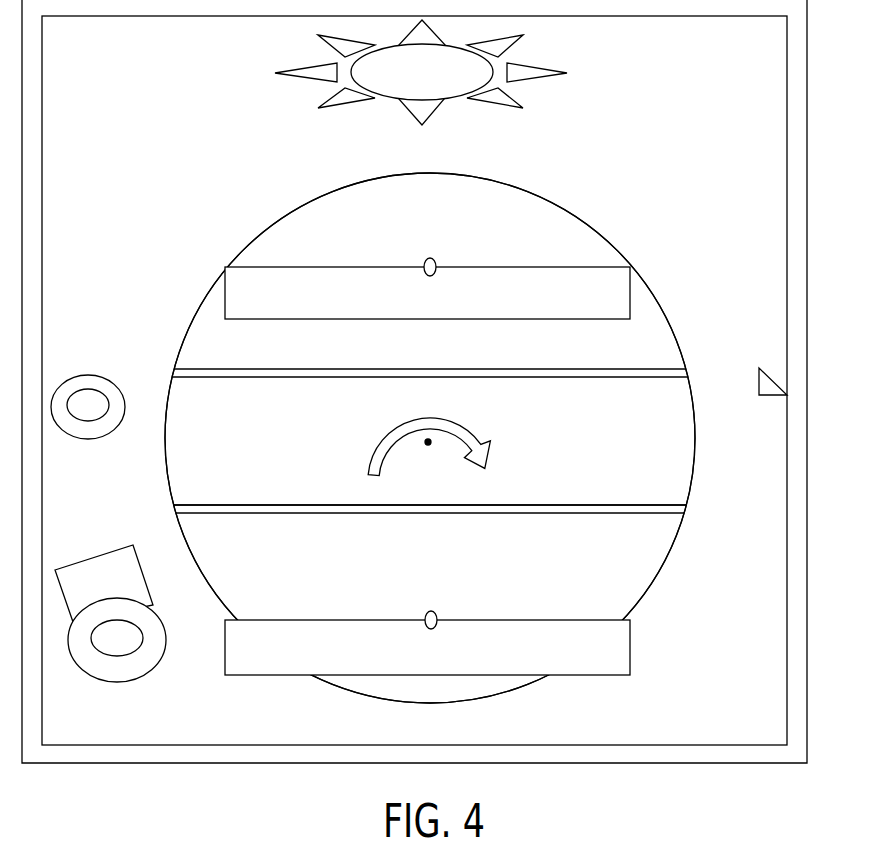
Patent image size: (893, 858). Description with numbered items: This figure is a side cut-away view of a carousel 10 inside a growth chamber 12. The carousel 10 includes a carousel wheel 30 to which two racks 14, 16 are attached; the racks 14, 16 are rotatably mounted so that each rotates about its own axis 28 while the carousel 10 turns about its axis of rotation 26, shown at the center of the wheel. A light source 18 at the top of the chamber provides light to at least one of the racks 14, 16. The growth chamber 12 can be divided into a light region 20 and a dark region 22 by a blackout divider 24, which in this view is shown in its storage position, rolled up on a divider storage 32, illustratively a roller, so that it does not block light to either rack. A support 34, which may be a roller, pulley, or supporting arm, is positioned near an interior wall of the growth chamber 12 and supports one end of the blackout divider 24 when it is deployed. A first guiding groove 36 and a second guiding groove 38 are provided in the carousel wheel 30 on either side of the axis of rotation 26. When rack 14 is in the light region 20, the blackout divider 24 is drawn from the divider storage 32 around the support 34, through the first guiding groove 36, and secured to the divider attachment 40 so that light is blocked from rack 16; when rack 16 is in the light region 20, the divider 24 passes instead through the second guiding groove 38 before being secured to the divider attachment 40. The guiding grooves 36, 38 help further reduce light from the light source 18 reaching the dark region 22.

The carousel 10 is at (170, 162).
The growth chamber 12 is at (787, 95).
The rack 14 is at (630, 284).
The rack 16 is at (515, 620).
The light source 18 is at (451, 96).
The light region 20 is at (622, 193).
The dark region 22 is at (712, 515).
The blackout divider 24 is at (97, 554).
The axis of rotation 26 is at (428, 446).
The axis 28 is at (432, 258).
The carousel wheel 30 is at (677, 343).
The divider storage 32 is at (120, 684).
The support 34 is at (86, 373).
The first guiding groove 36 is at (538, 378).
The second guiding groove 38 is at (542, 505).
The divider attachment 40 is at (767, 397).